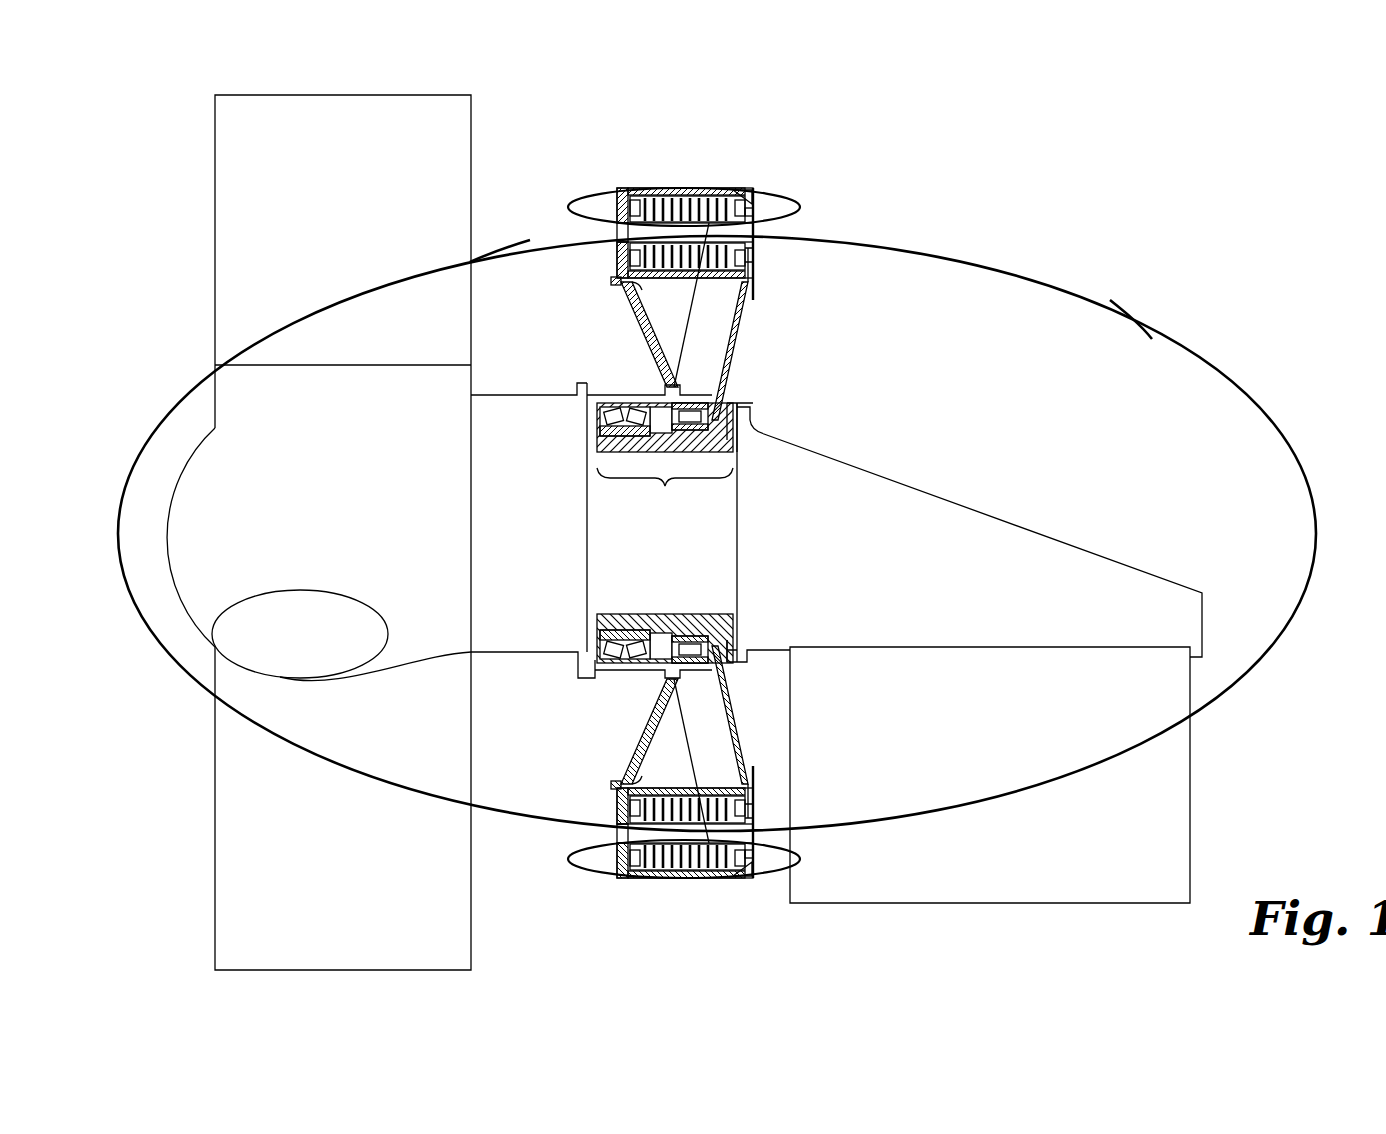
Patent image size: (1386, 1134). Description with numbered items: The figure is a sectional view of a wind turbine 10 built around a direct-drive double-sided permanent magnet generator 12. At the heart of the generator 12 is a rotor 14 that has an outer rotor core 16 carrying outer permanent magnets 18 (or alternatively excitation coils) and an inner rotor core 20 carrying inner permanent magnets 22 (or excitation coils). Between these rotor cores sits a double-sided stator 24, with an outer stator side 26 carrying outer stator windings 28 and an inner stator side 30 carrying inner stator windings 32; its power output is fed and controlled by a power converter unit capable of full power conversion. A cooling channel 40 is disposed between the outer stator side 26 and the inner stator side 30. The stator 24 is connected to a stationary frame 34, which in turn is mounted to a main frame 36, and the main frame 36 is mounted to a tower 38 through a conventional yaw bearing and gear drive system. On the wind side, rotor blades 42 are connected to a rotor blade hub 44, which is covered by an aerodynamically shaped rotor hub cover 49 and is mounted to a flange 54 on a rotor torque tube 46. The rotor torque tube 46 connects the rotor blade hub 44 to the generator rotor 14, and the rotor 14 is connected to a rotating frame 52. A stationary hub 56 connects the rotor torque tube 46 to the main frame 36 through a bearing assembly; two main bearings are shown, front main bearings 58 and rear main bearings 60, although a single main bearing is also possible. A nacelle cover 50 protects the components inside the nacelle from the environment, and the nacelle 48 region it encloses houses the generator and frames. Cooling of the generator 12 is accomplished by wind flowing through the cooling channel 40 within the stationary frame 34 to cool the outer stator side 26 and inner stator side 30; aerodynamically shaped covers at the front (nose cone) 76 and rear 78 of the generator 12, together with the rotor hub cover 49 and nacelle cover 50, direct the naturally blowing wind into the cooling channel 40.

The wind turbine 10 is at (1200, 152).
The generator 12 is at (850, 152).
The rotor 14 is at (618, 190).
The outer rotor core 16 is at (692, 188).
The outer permanent magnets 18 is at (636, 197).
The inner rotor core 20 is at (745, 312).
The inner permanent magnets 22 is at (633, 300).
The double-sided stator 24 is at (772, 212).
The outer stator side 26 is at (648, 196).
The outer stator windings 28 is at (752, 190).
The inner stator side 30 is at (748, 256).
The inner stator windings 32 is at (752, 270).
The stationary frame 34 is at (746, 393).
The main frame 36 is at (1022, 547).
The tower 38 is at (1178, 774).
The cooling channel 40 is at (722, 196).
The rotor blades 42 is at (242, 215).
The rotor blade hub 44 is at (218, 443).
The rotor torque tube 46 is at (642, 397).
The nacelle skin 48 is at (1136, 346).
The rotor hub cover 49 is at (530, 240).
The nacelle cover 50 is at (1113, 300).
The rotating frame 52 is at (652, 330).
The flange 54 is at (577, 390).
The stationary hub 56 is at (665, 456).
The front main bearings 58 is at (616, 422).
The rear main bearings 60 is at (700, 432).
The front cover (nose cone) 76 is at (570, 205).
The rear cover 78 is at (798, 207).